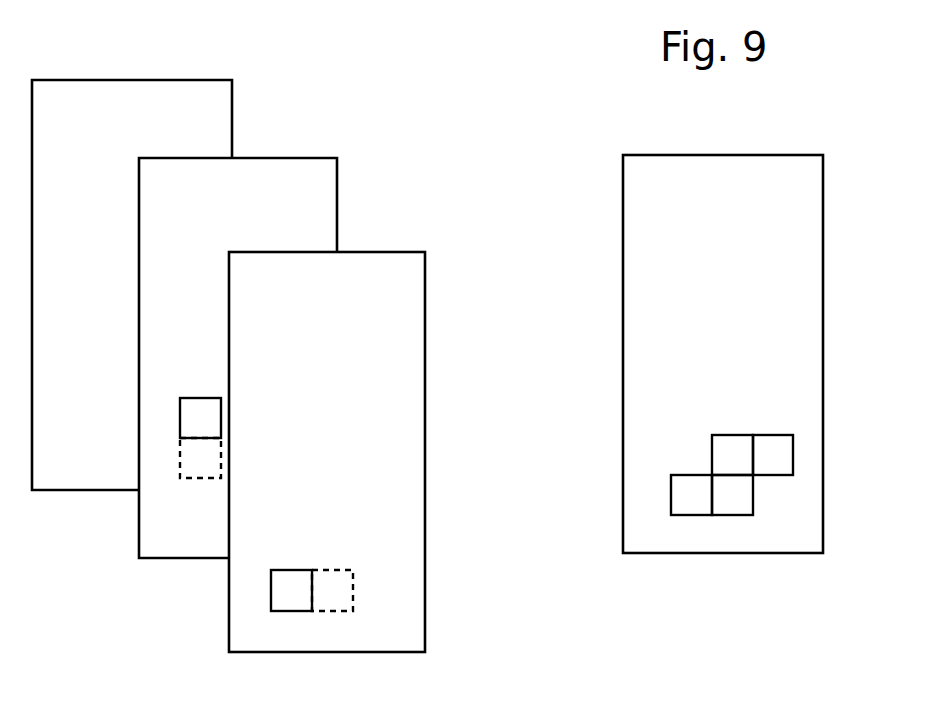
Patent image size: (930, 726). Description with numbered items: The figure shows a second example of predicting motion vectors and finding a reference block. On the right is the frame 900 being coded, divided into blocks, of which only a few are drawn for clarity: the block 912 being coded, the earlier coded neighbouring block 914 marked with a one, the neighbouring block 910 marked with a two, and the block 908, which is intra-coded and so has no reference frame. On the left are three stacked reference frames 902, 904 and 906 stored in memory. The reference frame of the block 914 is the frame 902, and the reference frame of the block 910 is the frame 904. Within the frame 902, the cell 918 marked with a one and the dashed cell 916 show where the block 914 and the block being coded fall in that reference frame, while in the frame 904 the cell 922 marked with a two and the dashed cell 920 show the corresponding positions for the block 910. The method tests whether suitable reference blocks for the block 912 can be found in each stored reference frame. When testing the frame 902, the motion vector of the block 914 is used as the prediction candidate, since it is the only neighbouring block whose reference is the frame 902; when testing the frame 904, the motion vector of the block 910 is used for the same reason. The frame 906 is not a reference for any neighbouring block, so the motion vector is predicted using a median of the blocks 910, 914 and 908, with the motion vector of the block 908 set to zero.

The frame being coded 900 is at (823, 287).
The reference frame 902 is at (425, 382).
The reference frame 904 is at (337, 203).
The reference frame 906 is at (232, 128).
The intra-coded block 908 is at (773, 435).
The neighbouring block 910 is at (720, 455).
The block being coded 912 is at (753, 485).
The neighbouring block 914 is at (693, 515).
The dashed cell containing C in first window 916 is at (357, 610).
The cell containing numeral 1 in first window 918 is at (297, 611).
The dashed cell containing C in second window 920 is at (192, 478).
The cell containing numeral 2 in second window 922 is at (180, 427).